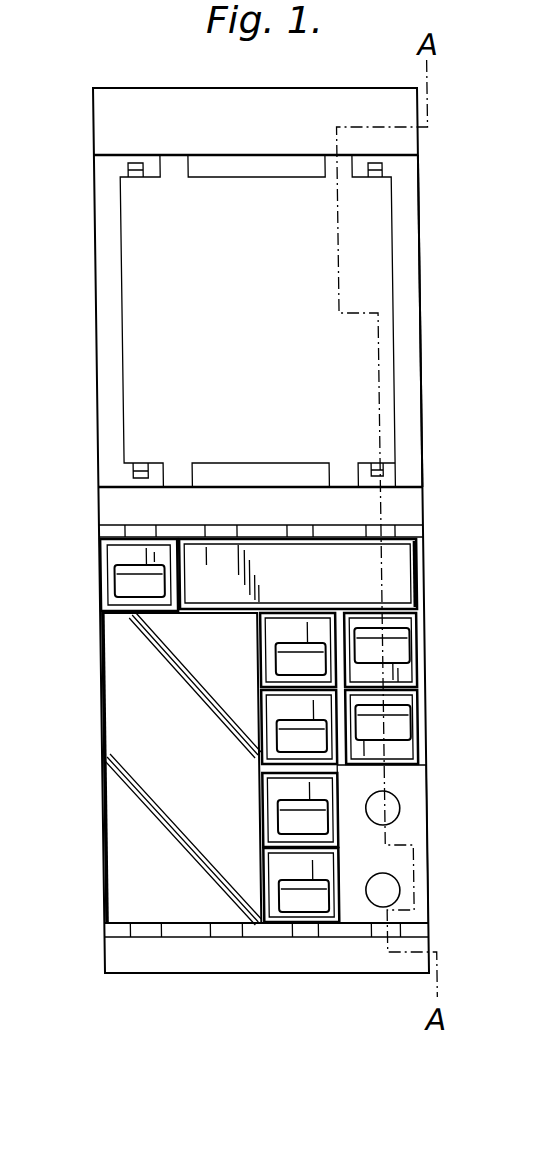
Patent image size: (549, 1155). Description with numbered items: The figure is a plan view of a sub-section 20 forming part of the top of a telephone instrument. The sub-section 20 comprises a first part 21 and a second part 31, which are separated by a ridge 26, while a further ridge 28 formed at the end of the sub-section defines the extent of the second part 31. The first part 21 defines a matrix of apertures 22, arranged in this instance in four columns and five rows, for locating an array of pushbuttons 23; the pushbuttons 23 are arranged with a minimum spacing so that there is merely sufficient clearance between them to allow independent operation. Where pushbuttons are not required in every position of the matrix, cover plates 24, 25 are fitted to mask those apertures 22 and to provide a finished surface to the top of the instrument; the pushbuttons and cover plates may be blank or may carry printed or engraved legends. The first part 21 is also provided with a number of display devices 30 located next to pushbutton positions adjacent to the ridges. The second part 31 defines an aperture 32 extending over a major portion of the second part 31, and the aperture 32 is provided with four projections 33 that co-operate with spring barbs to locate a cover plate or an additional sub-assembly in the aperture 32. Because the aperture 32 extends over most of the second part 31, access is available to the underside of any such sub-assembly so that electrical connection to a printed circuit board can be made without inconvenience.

The sub-section 20 is at (271, 988).
The first part 21 is at (405, 801).
The apertures 22 is at (383, 815).
The pushbuttons 23 is at (113, 553).
The cover plate 24 is at (395, 588).
The cover plate 25 is at (138, 758).
The ridge 26 is at (400, 510).
The ridge 28 is at (410, 141).
The display devices 30 is at (382, 531).
The second part 31 is at (405, 403).
The aperture 32 is at (352, 375).
The projections 33 is at (381, 170).